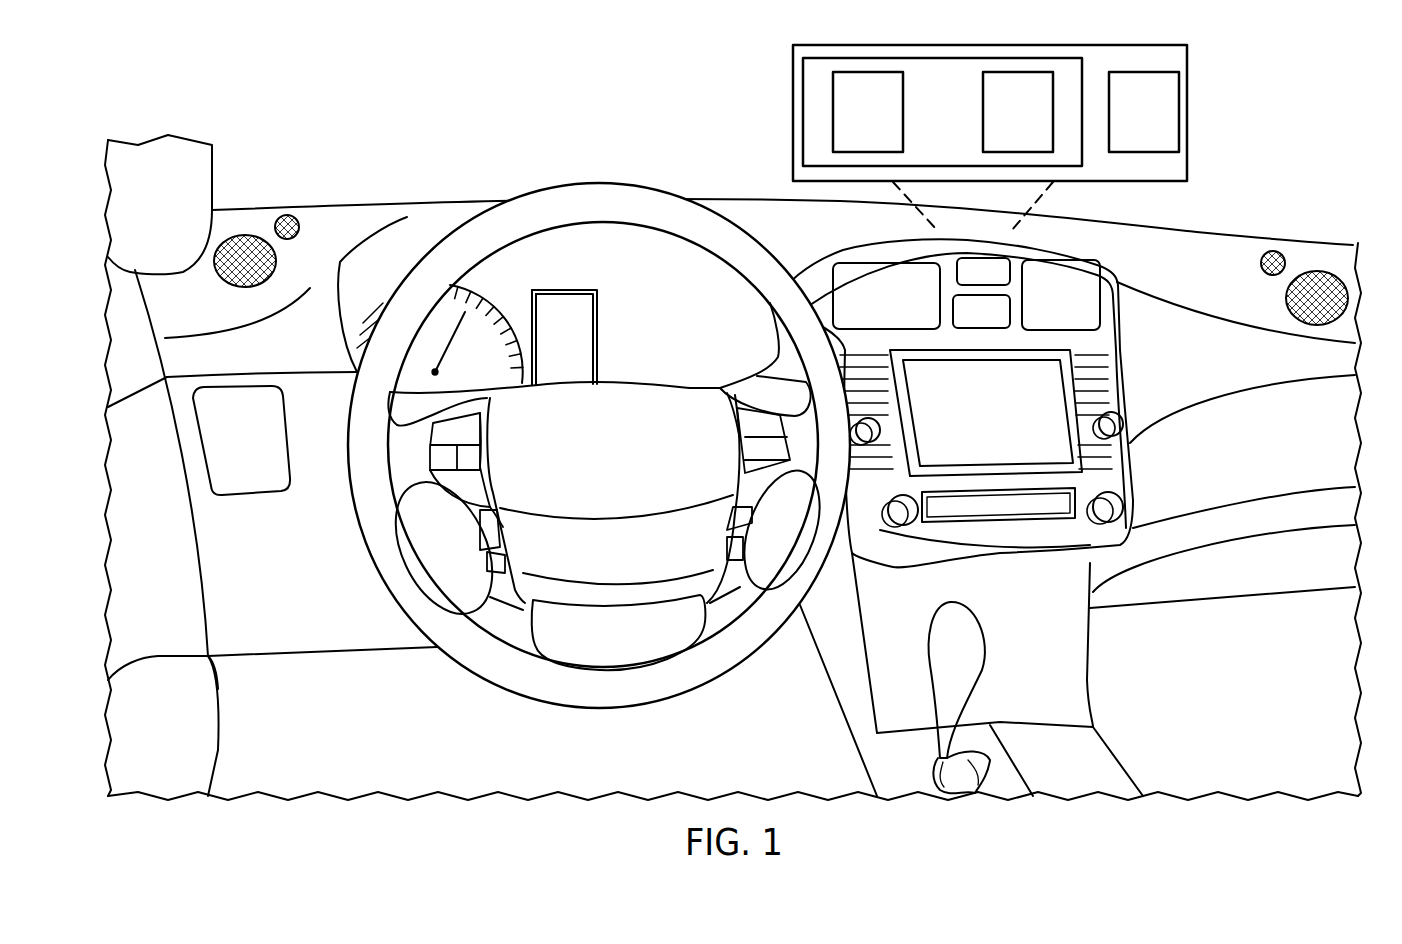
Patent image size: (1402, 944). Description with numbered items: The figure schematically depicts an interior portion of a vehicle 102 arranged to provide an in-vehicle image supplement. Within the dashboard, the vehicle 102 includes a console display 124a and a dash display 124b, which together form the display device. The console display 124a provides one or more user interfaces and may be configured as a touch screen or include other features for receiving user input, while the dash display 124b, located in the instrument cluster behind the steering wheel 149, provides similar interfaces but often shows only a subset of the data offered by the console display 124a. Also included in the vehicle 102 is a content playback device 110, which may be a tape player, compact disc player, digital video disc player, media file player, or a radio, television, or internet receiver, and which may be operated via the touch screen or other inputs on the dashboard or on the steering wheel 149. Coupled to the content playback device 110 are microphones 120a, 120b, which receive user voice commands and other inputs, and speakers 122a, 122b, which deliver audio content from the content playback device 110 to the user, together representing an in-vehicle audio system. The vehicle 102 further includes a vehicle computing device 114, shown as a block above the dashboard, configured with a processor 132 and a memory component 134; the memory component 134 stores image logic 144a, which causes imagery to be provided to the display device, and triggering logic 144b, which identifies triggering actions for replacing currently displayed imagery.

The vehicle 102 is at (382, 107).
The vehicle computing device 114 is at (792, 78).
The memory component 134 is at (803, 115).
The image logic 144a is at (841, 126).
The triggering logic 144b is at (991, 126).
The processor 132 is at (1124, 126).
The speaker 122a is at (247, 235).
The microphone 120a is at (288, 215).
The microphone 120b is at (1273, 251).
The speaker 122b is at (1320, 270).
The console display 124a is at (1052, 386).
The dash display 124b is at (580, 313).
The content playback device 110 is at (1002, 490).
The steering wheel 149 is at (358, 540).